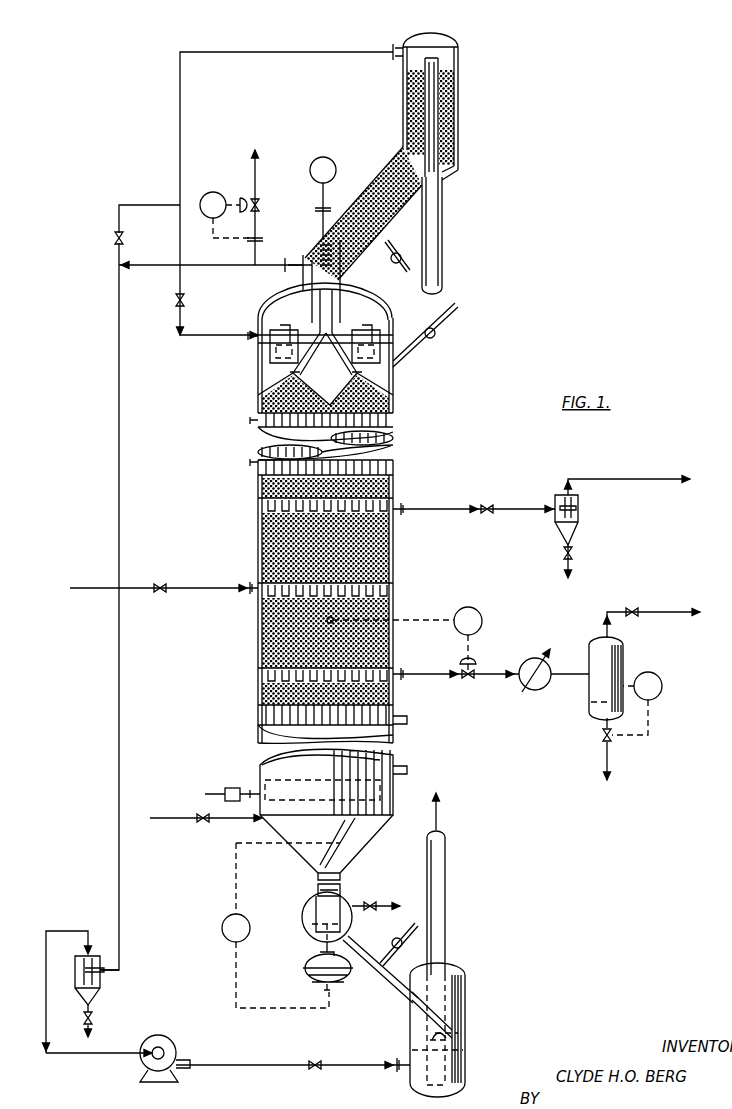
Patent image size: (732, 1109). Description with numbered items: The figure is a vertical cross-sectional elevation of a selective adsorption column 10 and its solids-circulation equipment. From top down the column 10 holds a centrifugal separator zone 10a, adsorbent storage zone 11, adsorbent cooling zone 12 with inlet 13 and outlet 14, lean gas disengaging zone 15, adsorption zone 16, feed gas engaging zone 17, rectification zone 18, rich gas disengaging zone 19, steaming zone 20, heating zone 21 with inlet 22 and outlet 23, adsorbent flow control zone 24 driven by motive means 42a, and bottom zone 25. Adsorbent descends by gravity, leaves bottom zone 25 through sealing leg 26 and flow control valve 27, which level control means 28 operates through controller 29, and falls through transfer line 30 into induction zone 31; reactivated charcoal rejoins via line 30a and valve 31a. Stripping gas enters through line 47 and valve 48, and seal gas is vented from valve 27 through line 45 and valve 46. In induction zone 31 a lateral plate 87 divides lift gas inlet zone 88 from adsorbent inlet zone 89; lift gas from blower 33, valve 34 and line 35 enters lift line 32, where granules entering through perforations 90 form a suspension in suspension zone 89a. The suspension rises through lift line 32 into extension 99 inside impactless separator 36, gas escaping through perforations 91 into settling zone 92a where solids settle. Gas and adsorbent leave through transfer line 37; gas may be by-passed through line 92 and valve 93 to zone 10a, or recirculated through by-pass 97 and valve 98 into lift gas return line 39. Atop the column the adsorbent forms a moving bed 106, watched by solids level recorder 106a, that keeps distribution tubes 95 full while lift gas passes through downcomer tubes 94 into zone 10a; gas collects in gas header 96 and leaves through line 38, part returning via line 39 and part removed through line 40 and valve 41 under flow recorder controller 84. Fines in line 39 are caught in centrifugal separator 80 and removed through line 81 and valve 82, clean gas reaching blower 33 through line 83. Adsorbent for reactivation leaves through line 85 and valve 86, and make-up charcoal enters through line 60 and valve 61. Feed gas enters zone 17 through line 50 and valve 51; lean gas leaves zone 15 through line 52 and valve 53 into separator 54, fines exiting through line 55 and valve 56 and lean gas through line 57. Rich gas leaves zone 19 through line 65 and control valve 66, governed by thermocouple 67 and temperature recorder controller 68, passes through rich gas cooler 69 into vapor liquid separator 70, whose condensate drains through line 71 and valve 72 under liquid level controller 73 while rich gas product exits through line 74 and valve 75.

The selective adsorption column 10 is at (396, 393).
The centrifugal separator zone 10a is at (266, 349).
The adsorbent hopper or storage zone 11 is at (282, 393).
The adsorbent cooling zone 12 is at (265, 438).
The inlet 13 is at (254, 468).
The outlet 14 is at (258, 426).
The lean gas disengaging zone 15 is at (262, 508).
The adsorption zone 16 is at (285, 538).
The feed gas engaging zone 17 is at (258, 596).
The rectification zone 18 is at (280, 632).
The rich gas disengaging zone 19 is at (264, 678).
The steaming zone 20 is at (270, 698).
The heating zone 21 is at (290, 715).
The inlet 22 is at (408, 762).
The outlet 23 is at (408, 712).
The adsorbent flow control zone 24 is at (285, 782).
The bottom zone 25 is at (364, 822).
The sealing leg 26 is at (318, 892).
The adsorbent flow control valve 27 is at (302, 917).
The level control means 28 is at (305, 866).
The pneumatic or electrical controller 29 is at (312, 966).
The transfer line 30 is at (388, 986).
The line 30a is at (404, 954).
The induction zone 31 is at (463, 978).
The valve 31a is at (395, 958).
The lift line 32 is at (436, 276).
The lift gas blower 33 is at (150, 1072).
The valve 34 is at (310, 1070).
The line 35 is at (354, 1065).
The impactless separator 36 is at (458, 50).
The transfer line 37 is at (373, 180).
The line 38 is at (264, 264).
The lift gas return line 39 is at (117, 310).
The line 40 is at (256, 170).
The valve 41 is at (262, 208).
The motive means 42a is at (222, 794).
The line 45 is at (358, 906).
The valve 46 is at (376, 906).
The line 47 is at (180, 828).
The valve 48 is at (196, 832).
The line 50 is at (96, 600).
The valve 51 is at (158, 600).
The line 52 is at (446, 506).
The valve 53 is at (490, 504).
The separator 54 is at (572, 530).
The line 55 is at (573, 547).
The valve 56 is at (564, 556).
The line 57 is at (656, 478).
The line 60 is at (452, 316).
The valve 61 is at (432, 340).
The line 65 is at (436, 672).
The automatic control valve 66 is at (482, 670).
The thermocouple 67 is at (333, 617).
The temperature recorder controller 68 is at (480, 612).
The rich gas cooler 69 is at (534, 690).
The vapor liquid separator 70 is at (606, 668).
The line 71 is at (605, 728).
The valve 72 is at (602, 750).
The liquid level controller 73 is at (662, 688).
The line 74 is at (612, 634).
The valve 75 is at (634, 608).
The centrifugal separator 80 is at (92, 958).
The line 81 is at (92, 1008).
The valve 82 is at (95, 1022).
The line 83 is at (44, 1000).
The flow recorder controller 84 is at (216, 192).
The line 85 is at (388, 268).
The valve 86 is at (394, 265).
The lateral plate 87 is at (460, 1056).
The lift gas inlet zone 88 is at (455, 1080).
The adsorbent inlet zone 89 is at (450, 1004).
The suspension zone 89a is at (460, 1034).
The perforations 90 is at (430, 1038).
The perforations 91 is at (445, 80).
The line 92 is at (298, 60).
The settling zone 92a is at (425, 44).
The valve 93 is at (174, 306).
The lift gas downcomer tubes 94 is at (312, 275).
The adsorbent distribution tubes 95 is at (350, 375).
The gas header 96 is at (272, 305).
The by-pass 97 is at (146, 200).
The valve 98 is at (124, 238).
The lift line extension 99 is at (456, 160).
The moving bed 106 is at (392, 213).
The solids level recorder 106a is at (330, 160).